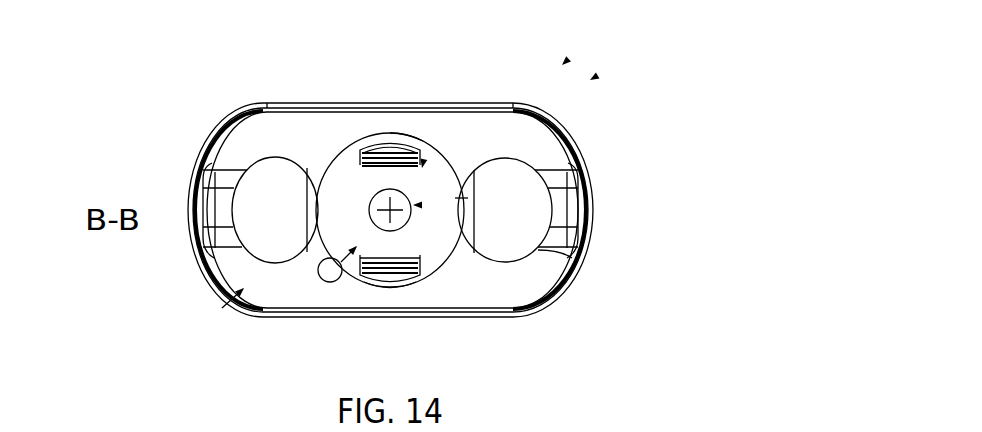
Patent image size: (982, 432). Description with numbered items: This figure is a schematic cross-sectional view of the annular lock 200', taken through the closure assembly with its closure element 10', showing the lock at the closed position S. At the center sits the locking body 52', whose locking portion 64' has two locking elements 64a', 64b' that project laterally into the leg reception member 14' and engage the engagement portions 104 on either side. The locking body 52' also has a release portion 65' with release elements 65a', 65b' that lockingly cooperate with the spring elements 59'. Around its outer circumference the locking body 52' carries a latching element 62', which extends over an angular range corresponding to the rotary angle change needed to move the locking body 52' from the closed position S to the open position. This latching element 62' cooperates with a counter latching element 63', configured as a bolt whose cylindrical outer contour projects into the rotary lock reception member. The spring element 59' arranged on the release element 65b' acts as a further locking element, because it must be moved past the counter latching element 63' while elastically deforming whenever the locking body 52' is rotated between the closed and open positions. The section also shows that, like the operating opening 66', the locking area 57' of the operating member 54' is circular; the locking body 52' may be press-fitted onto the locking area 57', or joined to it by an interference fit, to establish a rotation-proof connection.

The closure element 10' is at (381, 230).
The engagement portions 104 is at (259, 110).
The locking body 52' is at (390, 171).
The locking portion 64' is at (226, 191).
The locking element 64b' is at (559, 199).
The leg reception member 14' is at (389, 210).
The locking element 64a' is at (297, 223).
The locking area 57' is at (355, 110).
The release element 65a' is at (274, 188).
The spring element 59' is at (371, 214).
The release element 65b' is at (389, 315).
The latching element 62' is at (401, 317).
The operating opening 66' is at (428, 281).
The counter latching element 63' is at (290, 315).
The release portion 65' is at (318, 309).
The operating member 54' is at (494, 285).
The annular lock 200' is at (594, 36).
The closed position S is at (591, 79).